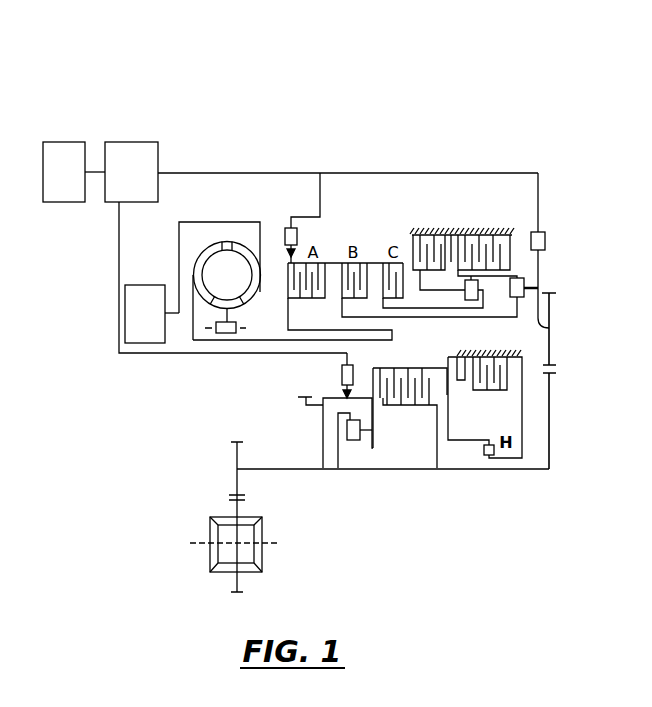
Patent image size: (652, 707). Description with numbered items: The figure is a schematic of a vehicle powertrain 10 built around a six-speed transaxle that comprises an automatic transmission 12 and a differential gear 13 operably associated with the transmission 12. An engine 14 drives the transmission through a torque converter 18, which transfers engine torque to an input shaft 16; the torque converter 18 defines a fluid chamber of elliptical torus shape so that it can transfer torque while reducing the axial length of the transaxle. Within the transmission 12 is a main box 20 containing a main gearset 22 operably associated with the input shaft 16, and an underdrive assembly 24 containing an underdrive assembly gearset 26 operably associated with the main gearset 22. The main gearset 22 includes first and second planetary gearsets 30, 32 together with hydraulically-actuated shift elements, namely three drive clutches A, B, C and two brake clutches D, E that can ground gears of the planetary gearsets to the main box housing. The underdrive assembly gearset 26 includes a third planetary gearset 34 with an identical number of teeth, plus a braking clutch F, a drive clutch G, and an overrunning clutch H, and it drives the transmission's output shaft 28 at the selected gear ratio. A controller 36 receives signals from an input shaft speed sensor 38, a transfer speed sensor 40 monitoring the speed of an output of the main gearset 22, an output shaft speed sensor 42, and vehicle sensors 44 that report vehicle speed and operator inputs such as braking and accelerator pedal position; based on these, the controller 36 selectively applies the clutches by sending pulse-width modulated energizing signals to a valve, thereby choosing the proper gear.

The vehicle powertrain 10 is at (135, 422).
The automatic transmission 12 is at (213, 433).
The differential gear 13 is at (211, 537).
The engine 14 is at (140, 344).
The input shaft 16 is at (257, 347).
The torque converter 18 is at (198, 343).
The main box 20 is at (384, 197).
The main gearset 22 is at (453, 203).
The underdrive assembly 24 is at (357, 461).
The underdrive assembly gearset 26 is at (384, 447).
The output shaft 28 is at (258, 471).
The first planetary gearset 30 is at (492, 309).
The second planetary gearset 32 is at (536, 287).
The third planetary gearset 34 is at (343, 448).
The controller 36 is at (130, 150).
The input shaft speed sensor 38 is at (286, 236).
The transfer speed sensor 40 is at (547, 240).
The output shaft speed sensor 42 is at (338, 376).
The vehicle sensors 44 is at (63, 150).